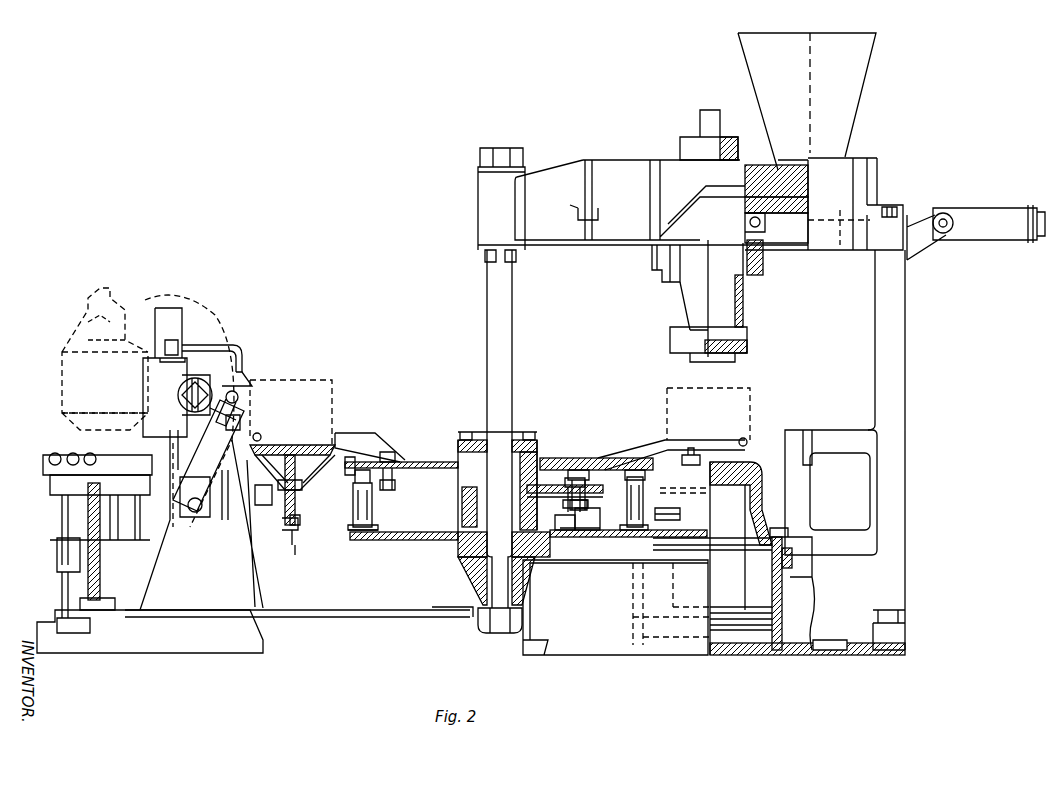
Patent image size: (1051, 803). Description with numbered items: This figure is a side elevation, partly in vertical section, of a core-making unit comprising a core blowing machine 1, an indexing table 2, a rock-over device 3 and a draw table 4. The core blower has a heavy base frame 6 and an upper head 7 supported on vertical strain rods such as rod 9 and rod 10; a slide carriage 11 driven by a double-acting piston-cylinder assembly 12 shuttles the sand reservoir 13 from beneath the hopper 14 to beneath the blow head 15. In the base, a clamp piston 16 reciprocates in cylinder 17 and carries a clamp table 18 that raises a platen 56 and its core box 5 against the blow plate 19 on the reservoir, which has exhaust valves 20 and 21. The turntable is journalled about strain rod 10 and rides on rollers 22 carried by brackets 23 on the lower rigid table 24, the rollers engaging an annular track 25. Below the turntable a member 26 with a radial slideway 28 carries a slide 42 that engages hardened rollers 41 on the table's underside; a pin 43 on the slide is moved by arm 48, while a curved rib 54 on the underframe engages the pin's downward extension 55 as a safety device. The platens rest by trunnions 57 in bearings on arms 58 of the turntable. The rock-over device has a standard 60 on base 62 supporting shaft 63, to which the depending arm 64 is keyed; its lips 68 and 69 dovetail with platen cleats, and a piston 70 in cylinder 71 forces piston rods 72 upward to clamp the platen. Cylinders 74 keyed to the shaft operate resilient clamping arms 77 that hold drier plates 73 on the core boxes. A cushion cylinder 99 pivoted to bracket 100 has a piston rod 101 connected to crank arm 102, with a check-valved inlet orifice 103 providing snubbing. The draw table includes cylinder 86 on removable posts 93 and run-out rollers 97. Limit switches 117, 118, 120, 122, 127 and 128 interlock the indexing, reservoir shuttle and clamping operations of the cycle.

The core blowing machine 1 is at (884, 171).
The indexing table 2 is at (430, 462).
The rock-over device 3 is at (266, 561).
The draw table 4 is at (53, 496).
The core boxes 5 is at (60, 372).
The base frame 6 is at (890, 632).
The upper frame or head 7 is at (578, 164).
The strain rod 9 is at (895, 300).
The strain rod 10 is at (487, 300).
The slide carriage 11 is at (789, 214).
The double-acting piston-cylinder assembly 12 is at (977, 215).
The sand reservoir 13 is at (744, 305).
The hopper 14 is at (862, 90).
The blow head 15 is at (692, 133).
The clamp piston 16 is at (765, 630).
The cylinder 17 is at (780, 591).
The clamp table 18 is at (752, 462).
The blow plate 19 is at (748, 333).
The exhaust valve 20 is at (652, 262).
The exhaust valve 21 is at (758, 268).
The rollers 22 is at (352, 487).
The upstanding brackets 23 is at (358, 531).
The lower rigid table 24 is at (410, 540).
The annular track or rail 25 is at (640, 456).
The member 26 is at (462, 503).
The radial slideway 28 is at (540, 485).
The hardened rollers 41 is at (398, 486).
The slide 42 is at (627, 515).
The pin 43 is at (575, 485).
The arm 48 is at (595, 533).
The curved rib or rail 54 is at (566, 530).
The downward extension 55 is at (572, 537).
The platens 56 is at (62, 352).
The trunnions 57 is at (748, 437).
The arms 58 is at (358, 440).
The standard 60 is at (228, 585).
The base 62 is at (207, 649).
The shaft 63 is at (180, 398).
The depending arm 64 is at (196, 306).
The reverse lip 68 is at (296, 474).
The reverse lip 69 is at (268, 442).
The double-acting piston 70 is at (296, 494).
The cylinder 71 is at (86, 322).
The piston rods 72 is at (259, 500).
The drier plates 73 is at (62, 413).
The double-acting cylinders 74 is at (166, 390).
The resilient clamping arms 77 is at (238, 345).
The cylinder 86 is at (86, 585).
The posts or columns 93 is at (72, 522).
The run-out rollers 97 is at (48, 457).
The cushion cylinder 99 is at (210, 413).
The bracket 100 is at (200, 518).
The piston rod 101 is at (236, 421).
The crank arm 102 is at (224, 386).
The inlet orifice 103 is at (225, 506).
The limit switch 117 is at (310, 540).
The limit switch 118 is at (312, 554).
The limit switch 120 is at (658, 512).
The limit switch 122 is at (712, 558).
The limit switch 127 is at (600, 208).
The limit switch 128 is at (690, 460).